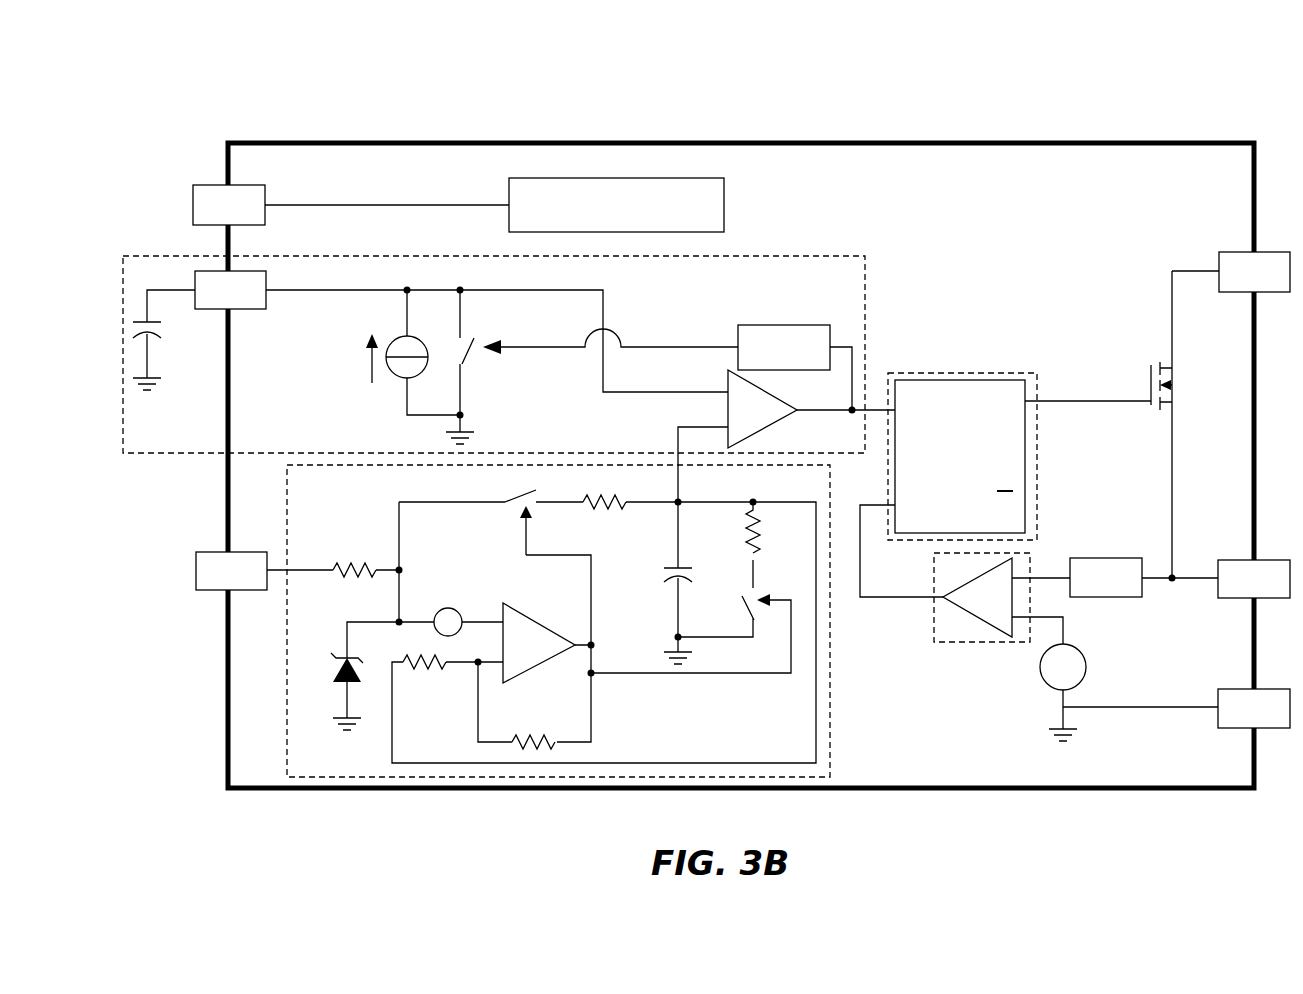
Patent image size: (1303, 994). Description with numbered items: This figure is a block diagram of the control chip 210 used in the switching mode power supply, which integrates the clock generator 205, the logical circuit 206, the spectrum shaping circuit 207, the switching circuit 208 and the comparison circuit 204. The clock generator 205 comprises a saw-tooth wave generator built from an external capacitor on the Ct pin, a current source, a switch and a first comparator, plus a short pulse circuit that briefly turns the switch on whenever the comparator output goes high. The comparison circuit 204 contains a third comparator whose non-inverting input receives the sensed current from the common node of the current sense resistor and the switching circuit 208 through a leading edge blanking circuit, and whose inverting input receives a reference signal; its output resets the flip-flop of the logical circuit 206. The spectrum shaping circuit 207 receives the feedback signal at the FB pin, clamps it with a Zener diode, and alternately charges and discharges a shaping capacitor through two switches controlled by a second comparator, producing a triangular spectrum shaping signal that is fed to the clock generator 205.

The power supply controller 210 is at (222, 130).
The clock generator 205 is at (815, 256).
The logical circuit 206 is at (952, 371).
The spectrum shaping circuit 207 is at (832, 760).
The switching circuit 208 is at (1178, 387).
The comparison circuit 204 is at (933, 618).